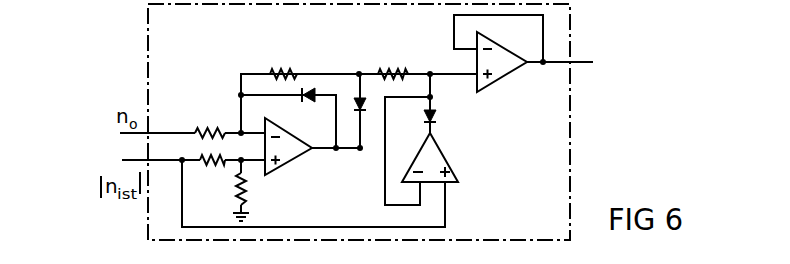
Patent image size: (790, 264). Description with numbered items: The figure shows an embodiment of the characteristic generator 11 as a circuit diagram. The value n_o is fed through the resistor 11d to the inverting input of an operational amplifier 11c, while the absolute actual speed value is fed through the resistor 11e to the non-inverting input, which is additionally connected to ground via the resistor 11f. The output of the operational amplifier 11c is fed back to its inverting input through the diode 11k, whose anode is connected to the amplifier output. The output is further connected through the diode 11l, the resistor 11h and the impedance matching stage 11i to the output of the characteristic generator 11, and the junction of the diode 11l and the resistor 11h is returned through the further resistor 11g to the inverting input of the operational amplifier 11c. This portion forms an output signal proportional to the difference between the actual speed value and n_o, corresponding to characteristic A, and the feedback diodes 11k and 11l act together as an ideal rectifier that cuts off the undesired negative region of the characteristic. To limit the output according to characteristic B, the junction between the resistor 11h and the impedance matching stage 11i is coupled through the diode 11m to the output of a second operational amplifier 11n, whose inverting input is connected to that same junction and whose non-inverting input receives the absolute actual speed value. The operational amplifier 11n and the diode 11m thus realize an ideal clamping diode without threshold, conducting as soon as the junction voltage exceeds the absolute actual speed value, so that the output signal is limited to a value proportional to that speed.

The characteristic generator 11 is at (570, 142).
The operational amplifier 11c is at (296, 158).
The resistor 11d is at (200, 130).
The resistor 11e is at (222, 166).
The resistor 11f is at (245, 193).
The further resistor 11g is at (290, 50).
The resistor 11h is at (377, 68).
The impedance matching stage 11i is at (493, 82).
The diode 11k is at (316, 110).
The diode 11l is at (366, 106).
The diode 11m is at (438, 116).
The operational amplifier 11n is at (450, 162).